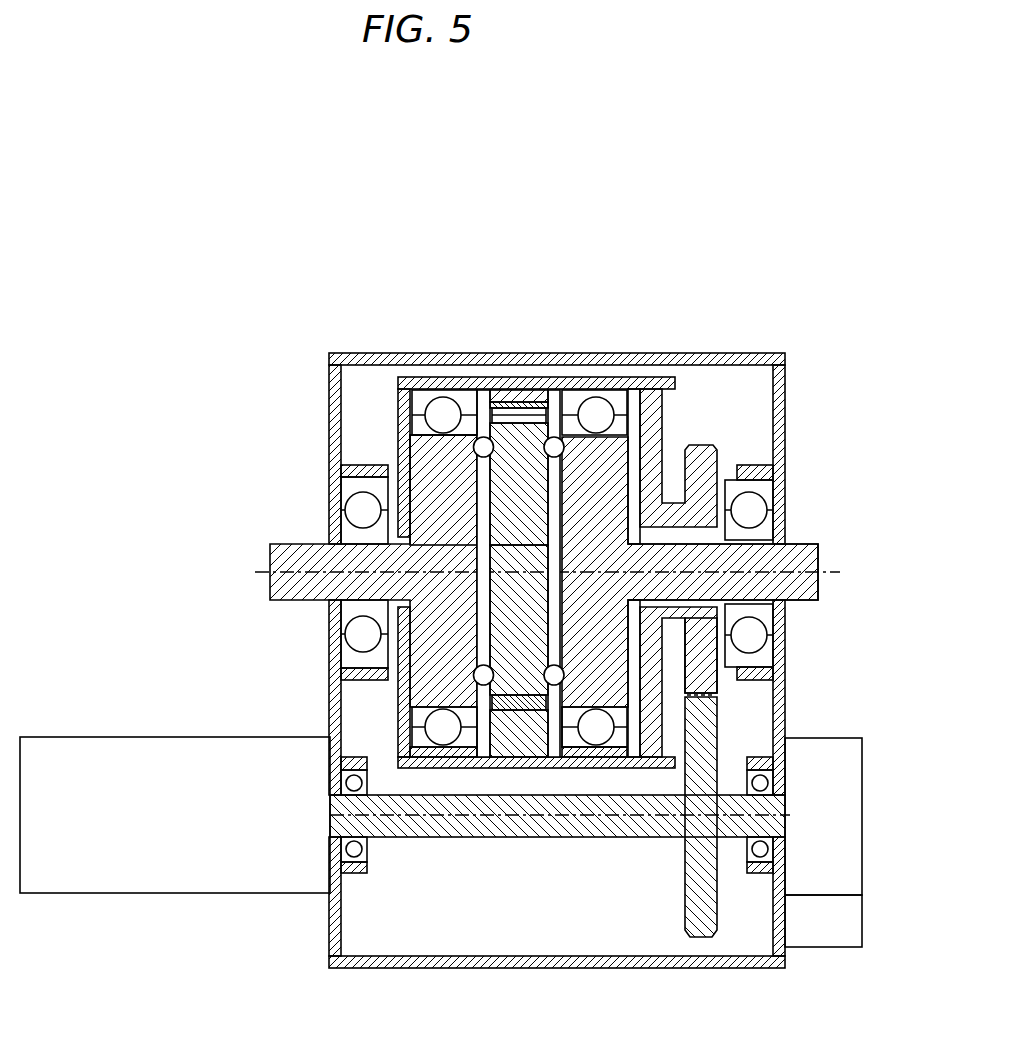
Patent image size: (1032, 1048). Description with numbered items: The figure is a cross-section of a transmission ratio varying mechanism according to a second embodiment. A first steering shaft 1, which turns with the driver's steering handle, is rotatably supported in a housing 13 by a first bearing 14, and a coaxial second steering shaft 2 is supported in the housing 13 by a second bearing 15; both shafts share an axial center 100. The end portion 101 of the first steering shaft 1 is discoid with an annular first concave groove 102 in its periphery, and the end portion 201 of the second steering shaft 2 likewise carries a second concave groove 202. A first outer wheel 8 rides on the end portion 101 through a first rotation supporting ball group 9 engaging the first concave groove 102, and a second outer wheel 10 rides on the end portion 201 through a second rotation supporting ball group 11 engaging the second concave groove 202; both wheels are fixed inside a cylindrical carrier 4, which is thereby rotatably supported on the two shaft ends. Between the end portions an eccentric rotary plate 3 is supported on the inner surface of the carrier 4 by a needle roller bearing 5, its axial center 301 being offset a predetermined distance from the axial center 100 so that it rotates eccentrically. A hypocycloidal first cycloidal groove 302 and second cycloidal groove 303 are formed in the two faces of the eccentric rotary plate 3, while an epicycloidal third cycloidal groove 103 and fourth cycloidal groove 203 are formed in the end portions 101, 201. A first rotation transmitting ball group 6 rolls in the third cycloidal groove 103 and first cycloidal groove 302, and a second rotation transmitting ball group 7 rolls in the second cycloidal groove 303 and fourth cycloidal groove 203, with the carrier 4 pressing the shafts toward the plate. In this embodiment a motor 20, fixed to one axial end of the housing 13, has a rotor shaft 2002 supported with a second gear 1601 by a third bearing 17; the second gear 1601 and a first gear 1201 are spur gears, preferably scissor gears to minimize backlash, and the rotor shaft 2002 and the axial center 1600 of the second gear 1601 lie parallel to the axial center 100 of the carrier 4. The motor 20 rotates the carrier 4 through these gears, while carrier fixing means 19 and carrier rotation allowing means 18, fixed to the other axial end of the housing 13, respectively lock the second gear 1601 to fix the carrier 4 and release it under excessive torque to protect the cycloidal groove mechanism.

The first steering shaft 1 is at (282, 583).
The second steering shaft 2 is at (807, 557).
The eccentric rotary plate 3 is at (505, 440).
The carrier 4 is at (648, 392).
The bearing 5 is at (500, 702).
The first rotation transmitting ball group 6 is at (484, 447).
The second rotation transmitting ball group 7 is at (517, 557).
The first outer wheel 8 is at (383, 352).
The first rotation supporting ball group 9 is at (425, 378).
The second outer wheel 10 is at (623, 380).
The second rotation supporting ball group 11 is at (600, 733).
The housing 13 is at (735, 352).
The first bearing 14 is at (345, 657).
The second bearing 15 is at (765, 500).
The third bearing 17 is at (347, 867).
The carrier rotation allowing means 18 is at (850, 835).
The carrier fixing means 19 is at (850, 923).
The motor 20 is at (175, 882).
The axial center 100 is at (840, 578).
The end portion 101 is at (417, 390).
The first concave groove 102 is at (423, 457).
The third cycloidal groove 103 is at (447, 400).
The end portion 201 is at (617, 447).
The second concave groove 202 is at (670, 400).
The fourth cycloidal groove 203 is at (585, 712).
The axial center 301 is at (550, 445).
The first cycloidal groove 302 is at (497, 695).
The second cycloidal groove 303 is at (540, 712).
The first gear 1201 is at (707, 460).
The axial center 1600 is at (330, 808).
The second gear 1601 is at (712, 905).
The rotor shaft 2002 is at (402, 832).